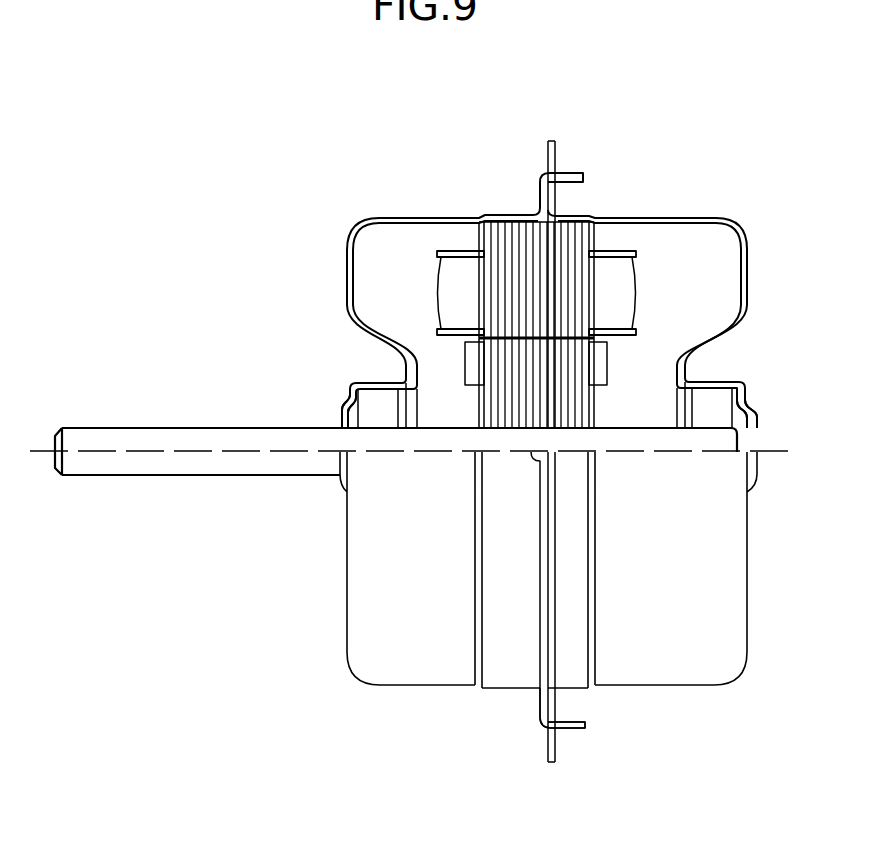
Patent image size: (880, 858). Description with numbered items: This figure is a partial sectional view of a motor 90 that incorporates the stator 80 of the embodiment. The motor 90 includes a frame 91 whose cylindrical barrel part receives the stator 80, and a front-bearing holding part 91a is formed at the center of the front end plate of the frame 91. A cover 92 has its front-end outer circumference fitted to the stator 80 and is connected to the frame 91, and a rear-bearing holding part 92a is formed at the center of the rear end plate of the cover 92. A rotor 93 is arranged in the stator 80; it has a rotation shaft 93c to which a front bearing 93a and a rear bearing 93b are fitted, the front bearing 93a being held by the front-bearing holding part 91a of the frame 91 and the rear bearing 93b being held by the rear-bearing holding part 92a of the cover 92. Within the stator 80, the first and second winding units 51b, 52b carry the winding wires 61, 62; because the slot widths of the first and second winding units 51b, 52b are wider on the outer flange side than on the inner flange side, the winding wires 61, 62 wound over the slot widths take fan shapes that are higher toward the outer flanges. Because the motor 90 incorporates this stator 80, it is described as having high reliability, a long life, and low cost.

The motor 90 is at (648, 141).
The frame 91 is at (380, 217).
The cover 92 is at (687, 218).
The front-bearing holding part 91a is at (357, 383).
The rear-bearing holding part 92a is at (722, 382).
The stator 80 is at (527, 238).
The winding wire 61 is at (437, 295).
The winding wire 62 is at (634, 293).
The first winding unit 51b is at (452, 250).
The second winding unit 52b is at (612, 293).
The rotor 93 is at (559, 366).
The front bearing 93a is at (377, 398).
The rear bearing 93b is at (715, 410).
The rotation shaft 93c is at (233, 438).